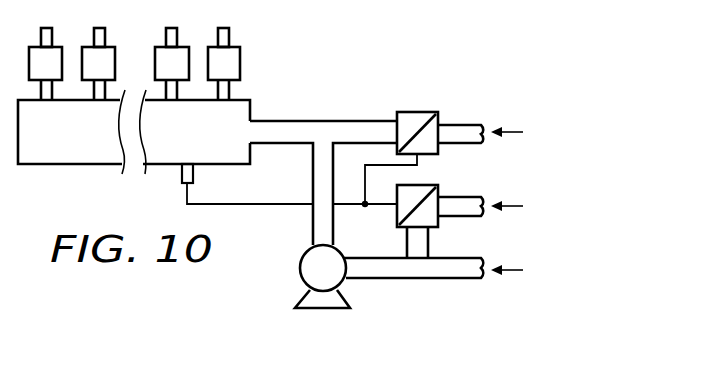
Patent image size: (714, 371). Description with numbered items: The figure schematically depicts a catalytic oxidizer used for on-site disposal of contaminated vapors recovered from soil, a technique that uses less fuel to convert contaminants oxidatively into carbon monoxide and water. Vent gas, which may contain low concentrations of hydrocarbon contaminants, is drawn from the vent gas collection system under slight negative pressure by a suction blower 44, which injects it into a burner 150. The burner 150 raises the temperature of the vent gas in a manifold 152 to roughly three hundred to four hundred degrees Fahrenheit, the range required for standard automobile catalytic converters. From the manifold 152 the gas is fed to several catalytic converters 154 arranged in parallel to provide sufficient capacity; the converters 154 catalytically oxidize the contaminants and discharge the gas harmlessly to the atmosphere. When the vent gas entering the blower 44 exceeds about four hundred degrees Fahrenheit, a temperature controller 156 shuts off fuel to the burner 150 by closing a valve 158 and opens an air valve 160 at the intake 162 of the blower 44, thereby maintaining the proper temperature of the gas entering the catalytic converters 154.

The suction blower 44 is at (300, 268).
The burner 150 is at (322, 121).
The manifold 152 is at (62, 165).
The catalytic converters 154 is at (240, 57).
The temperature controller 156 is at (180, 172).
The valve 158 is at (417, 110).
The air valve 160 is at (440, 188).
The intake 162 is at (397, 280).